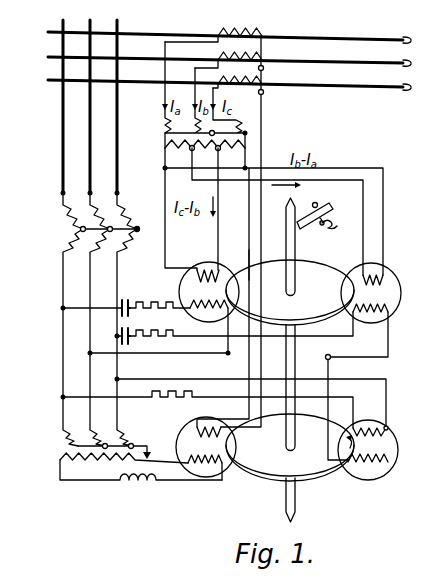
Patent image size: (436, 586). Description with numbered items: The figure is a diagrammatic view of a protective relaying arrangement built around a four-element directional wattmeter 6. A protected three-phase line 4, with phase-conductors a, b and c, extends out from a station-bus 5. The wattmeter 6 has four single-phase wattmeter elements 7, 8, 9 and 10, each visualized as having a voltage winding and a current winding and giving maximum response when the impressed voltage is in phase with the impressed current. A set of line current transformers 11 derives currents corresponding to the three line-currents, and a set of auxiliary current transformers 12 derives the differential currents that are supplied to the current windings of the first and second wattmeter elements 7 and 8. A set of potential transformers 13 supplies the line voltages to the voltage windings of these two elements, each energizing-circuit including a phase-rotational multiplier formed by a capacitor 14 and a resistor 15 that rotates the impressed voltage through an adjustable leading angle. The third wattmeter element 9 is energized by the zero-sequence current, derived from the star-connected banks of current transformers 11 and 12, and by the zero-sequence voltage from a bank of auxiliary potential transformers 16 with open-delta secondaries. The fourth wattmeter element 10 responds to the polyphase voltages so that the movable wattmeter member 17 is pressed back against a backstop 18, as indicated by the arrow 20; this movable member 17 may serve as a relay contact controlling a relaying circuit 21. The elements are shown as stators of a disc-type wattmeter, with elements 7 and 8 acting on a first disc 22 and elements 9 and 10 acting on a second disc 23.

The three-phase line 4 is at (328, 62).
The station-bus 5 is at (93, 104).
The directional wattmeter 6 is at (277, 265).
The first wattmeter element 7 is at (213, 263).
The second wattmeter element 8 is at (398, 283).
The third wattmeter element 9 is at (188, 427).
The fourth wattmeter element 10 is at (397, 447).
The line current transformers 11 is at (216, 31).
The auxiliary current transformers 12 is at (165, 134).
The potential transformers 13 is at (124, 216).
The capacitor 14 is at (131, 296).
The resistor 15 is at (143, 303).
The auxiliary potential transformers 16 is at (60, 462).
The movable wattmeter member 17 is at (330, 211).
The backstop 18 is at (317, 200).
The arrow 20 is at (350, 448).
The relaying circuit 21 is at (330, 229).
The first disc 22 is at (248, 266).
The second disc 23 is at (270, 484).